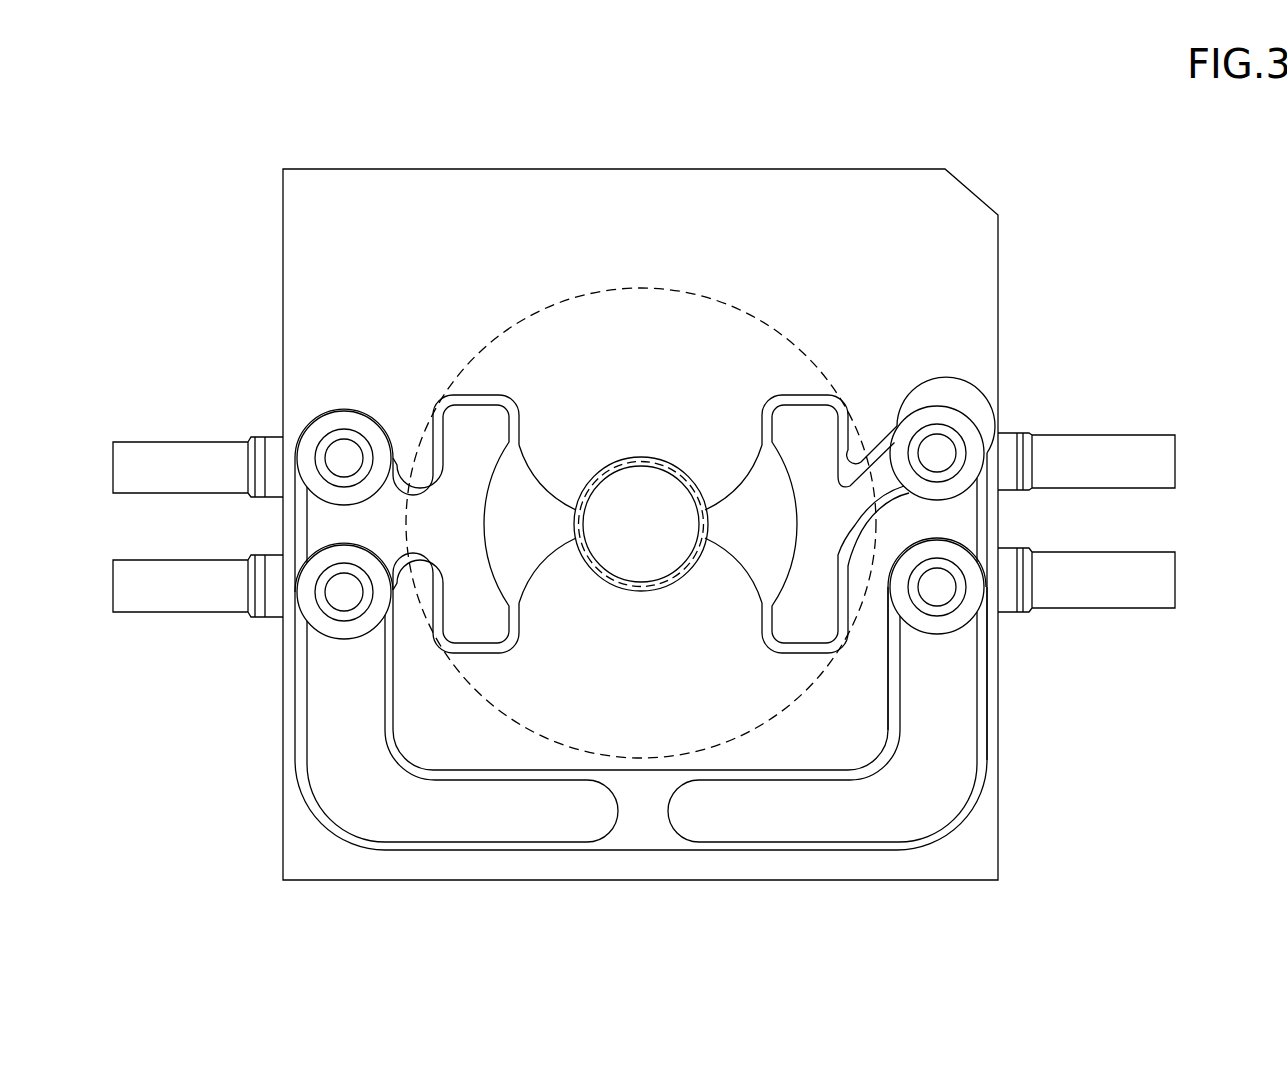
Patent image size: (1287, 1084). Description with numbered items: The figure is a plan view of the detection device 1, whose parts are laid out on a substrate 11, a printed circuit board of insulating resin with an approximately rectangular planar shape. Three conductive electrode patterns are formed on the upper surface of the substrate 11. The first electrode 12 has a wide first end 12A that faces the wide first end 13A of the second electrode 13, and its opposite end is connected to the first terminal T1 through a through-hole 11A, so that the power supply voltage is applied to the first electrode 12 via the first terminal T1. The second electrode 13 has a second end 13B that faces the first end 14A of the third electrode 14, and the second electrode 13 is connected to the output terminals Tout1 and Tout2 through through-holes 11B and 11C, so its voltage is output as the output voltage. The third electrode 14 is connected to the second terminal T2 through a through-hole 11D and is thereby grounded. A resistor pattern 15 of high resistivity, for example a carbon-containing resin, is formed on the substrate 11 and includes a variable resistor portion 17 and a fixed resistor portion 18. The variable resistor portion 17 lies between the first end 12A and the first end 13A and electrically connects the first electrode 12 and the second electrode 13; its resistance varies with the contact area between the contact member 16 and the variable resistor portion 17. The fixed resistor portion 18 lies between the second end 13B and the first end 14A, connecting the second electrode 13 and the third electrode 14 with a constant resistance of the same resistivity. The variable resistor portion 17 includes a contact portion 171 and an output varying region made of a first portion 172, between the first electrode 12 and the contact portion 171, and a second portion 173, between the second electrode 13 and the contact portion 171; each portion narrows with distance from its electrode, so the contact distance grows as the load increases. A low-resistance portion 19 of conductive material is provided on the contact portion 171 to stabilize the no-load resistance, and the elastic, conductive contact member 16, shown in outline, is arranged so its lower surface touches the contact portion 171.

The detection device 1 is at (998, 157).
The substrate 11 is at (888, 181).
The through-hole 11A is at (940, 452).
The through-hole 11B is at (350, 460).
The through-hole 11C is at (347, 595).
The through-hole 11D is at (939, 592).
The first electrode 12 is at (820, 394).
The first end 12A is at (857, 538).
The second electrode 13 is at (466, 393).
The first end 13A is at (472, 538).
The second end 13B is at (583, 827).
The third electrode 14 is at (787, 822).
The first end 14A is at (748, 827).
The resistor pattern 15 is at (645, 852).
The contact member 16 is at (780, 331).
The variable resistor portion 17 is at (783, 392).
The contact portion 171 is at (640, 457).
The first portion 172 is at (792, 538).
The second portion 173 is at (552, 538).
The fixed resistor portion 18 is at (660, 827).
The low-resistance portion 19 is at (658, 538).
The first terminal T1 is at (1143, 434).
The second terminal T2 is at (1143, 551).
The output terminal Tout1 is at (158, 441).
The output terminal Tout2 is at (158, 559).